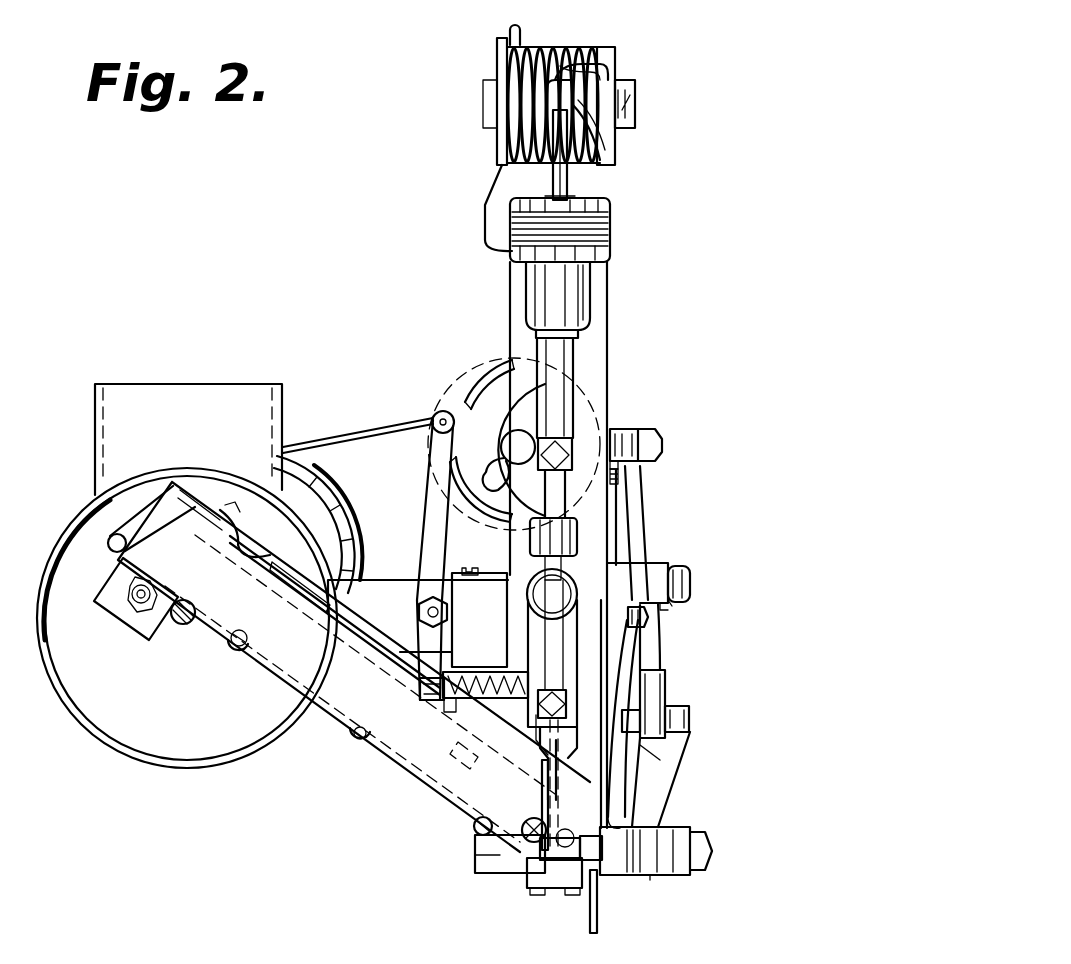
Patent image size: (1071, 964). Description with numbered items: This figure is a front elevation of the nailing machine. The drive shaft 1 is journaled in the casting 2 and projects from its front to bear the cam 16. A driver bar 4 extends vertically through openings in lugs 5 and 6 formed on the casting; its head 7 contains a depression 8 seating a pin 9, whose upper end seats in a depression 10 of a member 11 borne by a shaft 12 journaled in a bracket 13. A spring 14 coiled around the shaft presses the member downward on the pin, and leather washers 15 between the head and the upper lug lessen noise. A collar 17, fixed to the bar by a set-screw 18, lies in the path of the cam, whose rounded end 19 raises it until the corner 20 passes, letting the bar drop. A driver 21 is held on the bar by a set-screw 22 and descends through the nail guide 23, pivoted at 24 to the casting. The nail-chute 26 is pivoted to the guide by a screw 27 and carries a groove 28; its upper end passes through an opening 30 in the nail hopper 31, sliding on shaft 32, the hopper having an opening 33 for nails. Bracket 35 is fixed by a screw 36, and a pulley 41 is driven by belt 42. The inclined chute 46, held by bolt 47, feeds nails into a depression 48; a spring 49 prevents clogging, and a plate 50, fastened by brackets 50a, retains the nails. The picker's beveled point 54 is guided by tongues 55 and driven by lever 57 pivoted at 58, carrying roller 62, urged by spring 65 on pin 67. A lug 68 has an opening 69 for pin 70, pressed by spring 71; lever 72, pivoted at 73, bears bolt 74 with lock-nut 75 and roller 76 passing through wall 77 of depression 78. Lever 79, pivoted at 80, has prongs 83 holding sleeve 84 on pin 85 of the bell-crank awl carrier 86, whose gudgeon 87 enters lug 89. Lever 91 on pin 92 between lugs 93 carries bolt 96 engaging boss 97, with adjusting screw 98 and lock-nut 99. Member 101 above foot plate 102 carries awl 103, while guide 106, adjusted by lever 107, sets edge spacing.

The drive shaft 1 is at (505, 445).
The casting 2 is at (608, 273).
The driver bar 4 is at (563, 348).
The lug 5 is at (577, 298).
The lug 6 is at (580, 532).
The head 7 is at (611, 206).
The depression 8 is at (526, 182).
The pin 9 is at (568, 181).
The depression 10 is at (582, 105).
The member 11 is at (598, 128).
The shaft 12 is at (636, 106).
The bracket 13 is at (497, 135).
The spring 14 is at (555, 57).
The leather washers 15 is at (610, 238).
The cam 16 is at (505, 450).
The collar 17 is at (562, 472).
The set-screw 18 is at (572, 430).
The rounded end 19 is at (526, 490).
The corner 20 is at (503, 437).
The driver 21 is at (552, 730).
The set-screw 22 is at (564, 705).
The nail guide 23 is at (566, 761).
The pivot 24 is at (566, 592).
The nail-chute 26 is at (354, 667).
The screw 27 is at (545, 838).
The groove 28 is at (392, 727).
The opening 30 is at (303, 700).
The nail hopper 31 is at (187, 618).
The shaft 32 is at (178, 622).
The opening 33 is at (107, 450).
The bracket 35 is at (418, 616).
The screw 36 is at (470, 570).
The pulley 41 is at (345, 506).
The belt 42 is at (322, 440).
The inclined chute 46 is at (200, 500).
The bolt 47 is at (133, 600).
The depression 48 is at (188, 503).
The spring 49 is at (228, 518).
The plate 50 is at (380, 625).
The brackets 50a is at (252, 680).
The beveled point 54 is at (567, 785).
The tongues 55 is at (541, 786).
The lever 57 is at (665, 756).
The pivot 58 is at (646, 617).
The roller 62 is at (616, 430).
The spring 65 is at (620, 466).
The pin 67 is at (620, 477).
The lug 68 is at (497, 664).
The opening 69 is at (472, 740).
The pin 70 is at (538, 716).
The spring 71 is at (448, 704).
The lever 72 is at (422, 502).
The pivot 73 is at (425, 615).
The bolt 74 is at (445, 672).
The lock-nut 75 is at (418, 688).
The roller 76 is at (440, 418).
The wall 77 is at (483, 382).
The depression 78 is at (508, 378).
The lever 79 is at (637, 583).
The pivot 80 is at (690, 582).
The prongs 83 is at (656, 706).
The sleeve 84 is at (666, 726).
The pin 85 is at (690, 720).
The bell-crank awl carrier 86 is at (615, 790).
The gudgeon 87 is at (606, 870).
The lug 89 is at (480, 862).
The lever 91 is at (644, 724).
The pin 92 is at (650, 645).
The lugs 93 is at (636, 660).
The bolt 96 is at (712, 855).
The boss 97 is at (655, 872).
The screw 98 is at (672, 604).
The lock-nut 99 is at (665, 607).
The member 101 is at (568, 912).
The foot plate 102 is at (480, 840).
The awl 103 is at (550, 855).
The guide 106 is at (548, 876).
The lever 107 is at (596, 905).